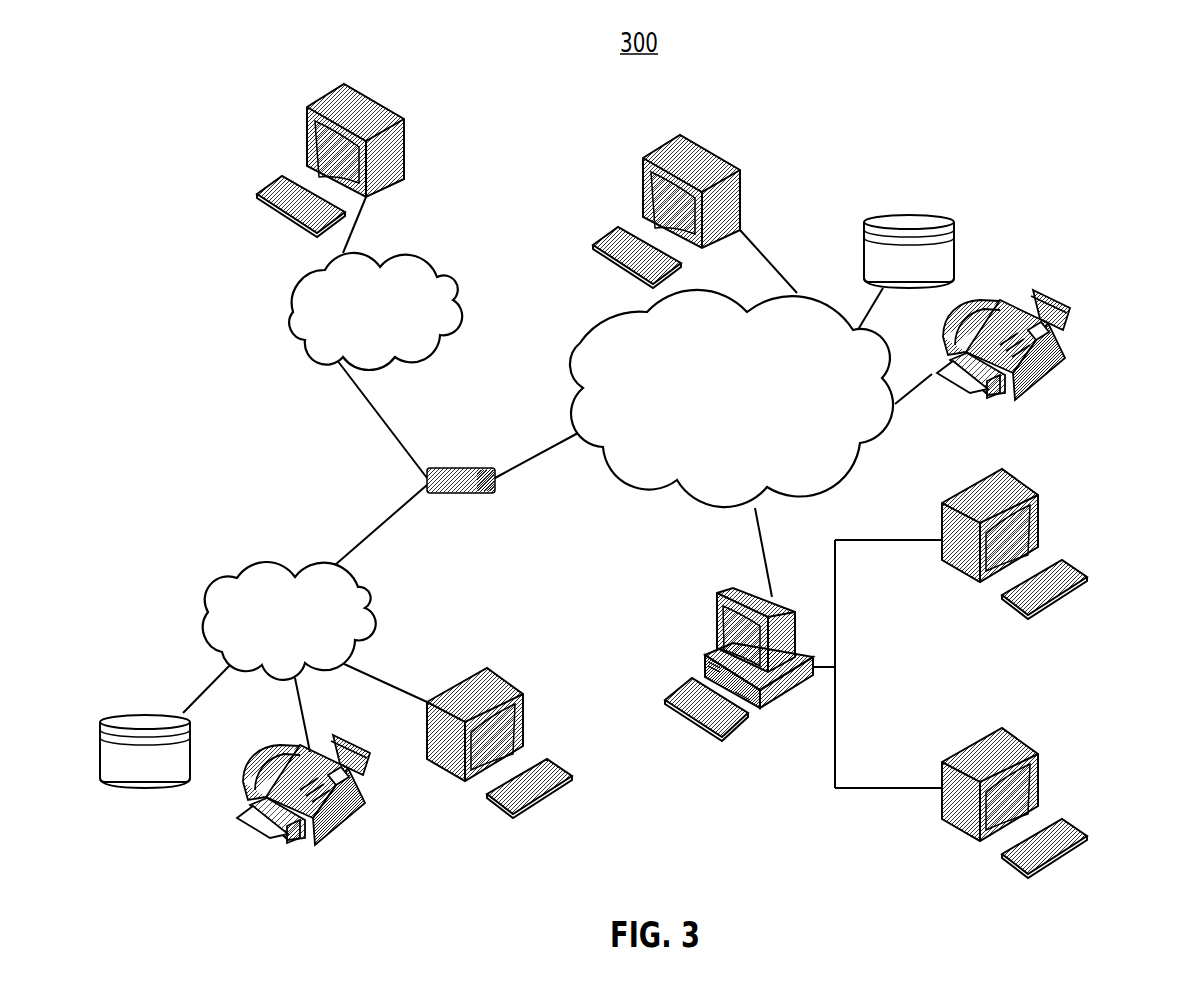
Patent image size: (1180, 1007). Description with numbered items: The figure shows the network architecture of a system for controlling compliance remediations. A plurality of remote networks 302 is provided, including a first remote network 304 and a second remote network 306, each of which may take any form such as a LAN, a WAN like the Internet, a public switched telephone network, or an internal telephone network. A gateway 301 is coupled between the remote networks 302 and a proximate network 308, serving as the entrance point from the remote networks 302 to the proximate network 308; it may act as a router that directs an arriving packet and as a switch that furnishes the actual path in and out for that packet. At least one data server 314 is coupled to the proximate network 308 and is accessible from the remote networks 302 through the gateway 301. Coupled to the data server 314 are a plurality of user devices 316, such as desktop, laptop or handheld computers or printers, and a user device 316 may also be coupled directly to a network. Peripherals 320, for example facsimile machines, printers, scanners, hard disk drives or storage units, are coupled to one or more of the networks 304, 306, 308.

The gateway 301 is at (460, 468).
The remote networks 302 is at (268, 397).
The first remote network 304 is at (208, 592).
The second remote network 306 is at (462, 320).
The proximate network 308 is at (862, 462).
The data server 314 is at (713, 620).
The user devices 316 is at (403, 148).
The peripheral 320 is at (909, 213).